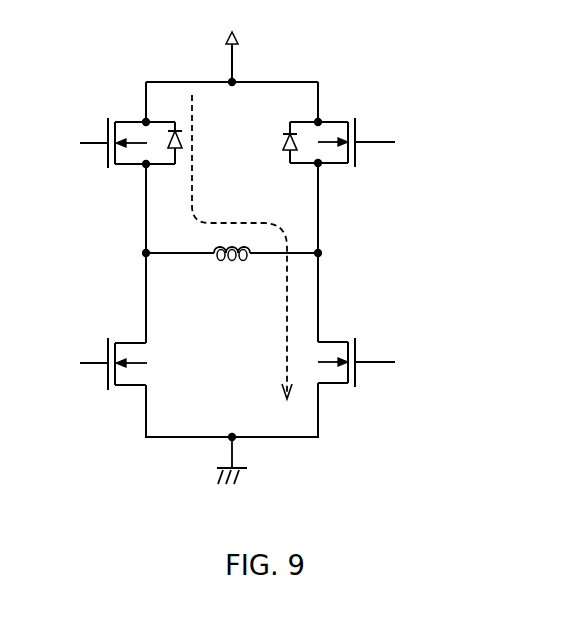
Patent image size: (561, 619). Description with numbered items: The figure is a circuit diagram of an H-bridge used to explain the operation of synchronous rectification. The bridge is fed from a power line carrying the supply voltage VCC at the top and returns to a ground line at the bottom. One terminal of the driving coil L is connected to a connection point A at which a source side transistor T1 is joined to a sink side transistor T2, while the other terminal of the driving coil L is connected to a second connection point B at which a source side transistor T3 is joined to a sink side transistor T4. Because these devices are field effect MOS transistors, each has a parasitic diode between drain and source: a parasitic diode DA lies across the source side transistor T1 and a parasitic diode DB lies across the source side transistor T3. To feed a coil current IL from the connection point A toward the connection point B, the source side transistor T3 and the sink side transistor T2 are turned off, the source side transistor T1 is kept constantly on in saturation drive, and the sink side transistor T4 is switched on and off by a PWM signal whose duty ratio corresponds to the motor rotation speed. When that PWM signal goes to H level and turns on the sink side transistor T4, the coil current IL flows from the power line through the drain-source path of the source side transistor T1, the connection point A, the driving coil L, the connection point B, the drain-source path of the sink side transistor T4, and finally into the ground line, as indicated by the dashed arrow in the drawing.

The source side transistor T1 is at (117, 132).
The sink side transistor T2 is at (97, 352).
The source side transistor T3 is at (352, 128).
The sink side transistor T4 is at (397, 350).
The parasitic diode DA is at (200, 143).
The parasitic diode DB is at (271, 142).
The driving coil L is at (232, 274).
The coil current IL is at (242, 247).
The connection point A is at (158, 240).
The second connection point B is at (334, 241).
The power supply voltage VCC is at (233, 43).